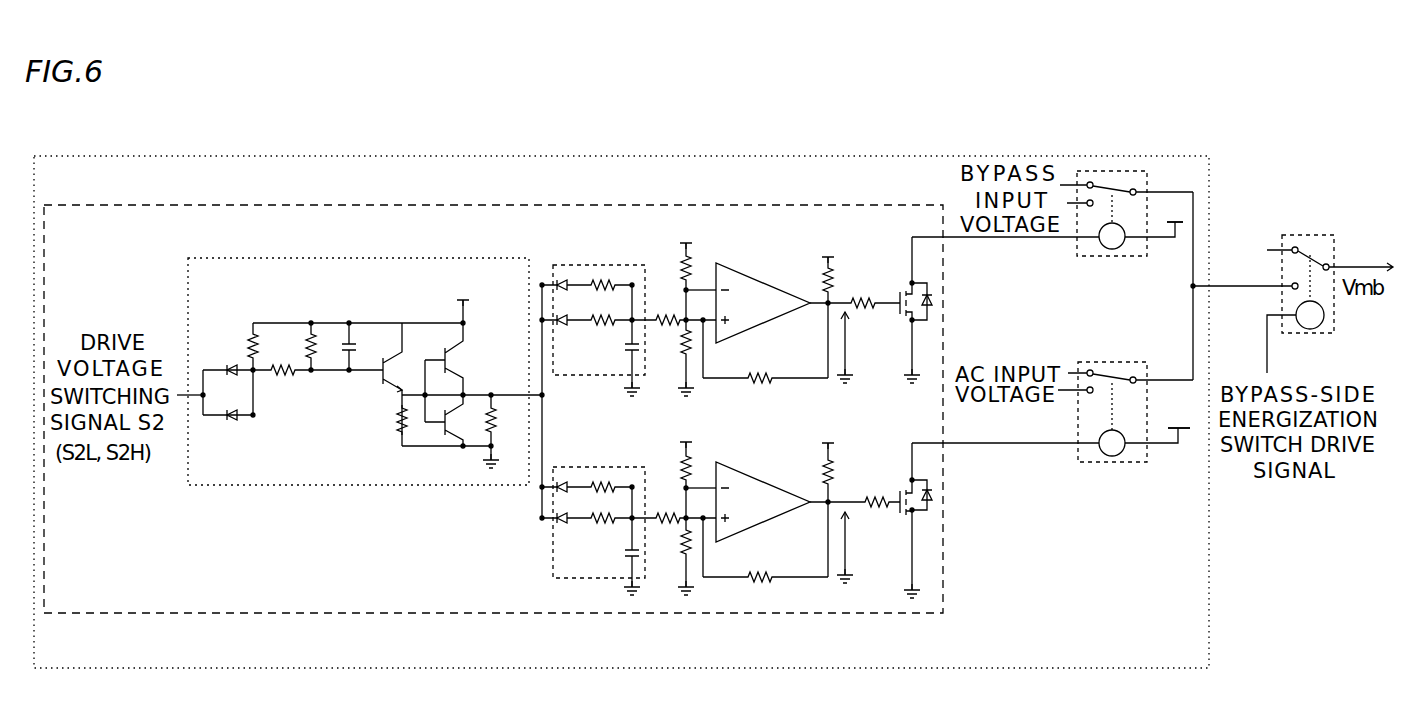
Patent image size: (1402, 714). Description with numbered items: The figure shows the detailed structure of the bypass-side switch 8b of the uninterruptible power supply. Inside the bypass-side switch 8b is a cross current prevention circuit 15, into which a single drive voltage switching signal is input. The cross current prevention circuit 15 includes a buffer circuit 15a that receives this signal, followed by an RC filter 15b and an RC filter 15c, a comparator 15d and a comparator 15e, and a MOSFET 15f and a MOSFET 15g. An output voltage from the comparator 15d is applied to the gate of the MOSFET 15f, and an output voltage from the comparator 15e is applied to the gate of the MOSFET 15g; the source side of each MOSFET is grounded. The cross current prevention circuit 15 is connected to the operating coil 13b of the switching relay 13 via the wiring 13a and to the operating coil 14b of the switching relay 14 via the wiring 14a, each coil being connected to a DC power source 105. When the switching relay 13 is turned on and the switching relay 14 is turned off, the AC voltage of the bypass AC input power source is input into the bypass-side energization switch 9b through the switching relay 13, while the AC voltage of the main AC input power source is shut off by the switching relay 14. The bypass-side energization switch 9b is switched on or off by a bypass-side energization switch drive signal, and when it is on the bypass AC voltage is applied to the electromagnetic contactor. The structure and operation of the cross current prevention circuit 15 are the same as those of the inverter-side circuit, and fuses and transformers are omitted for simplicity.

The bypass-side switch 8b is at (148, 156).
The cross current prevention circuit 15 is at (225, 205).
The buffer circuit 15a is at (212, 258).
The RC filter 15b is at (590, 265).
The RC filter 15c is at (600, 467).
The comparator 15d is at (740, 272).
The comparator 15e is at (740, 470).
The MOSFET 15f is at (903, 272).
The MOSFET 15g is at (905, 471).
The switching relay 13 is at (1126, 237).
The wiring 13a is at (1017, 238).
The operating coil 13b is at (1108, 257).
The switching relay 14 is at (1125, 433).
The wiring 14a is at (1023, 447).
The operating coil 14b is at (1108, 462).
The DC power source 105 is at (1182, 209).
The bypass-side energization switch 9b is at (1312, 235).